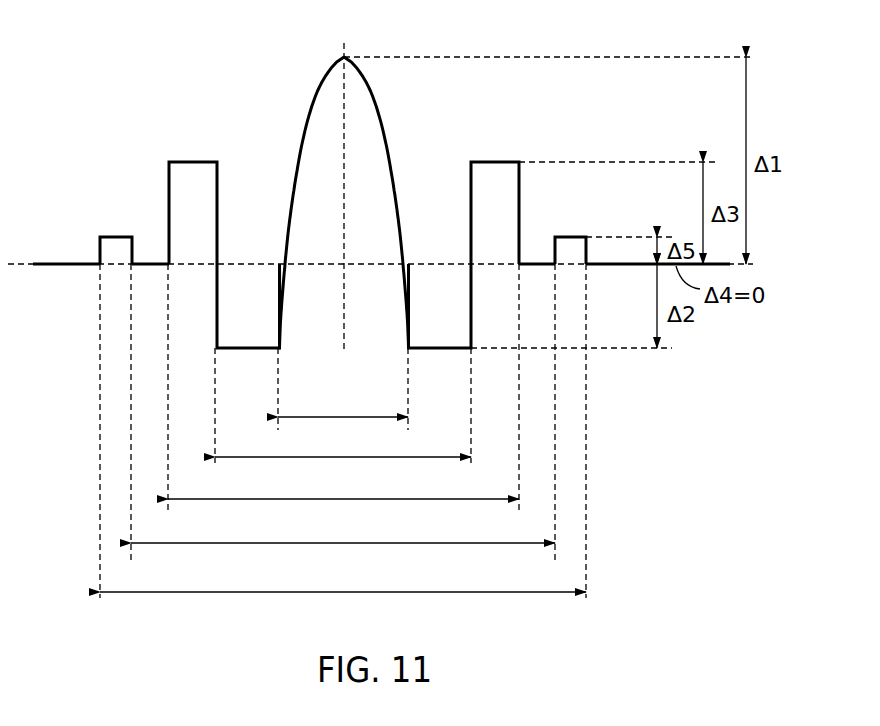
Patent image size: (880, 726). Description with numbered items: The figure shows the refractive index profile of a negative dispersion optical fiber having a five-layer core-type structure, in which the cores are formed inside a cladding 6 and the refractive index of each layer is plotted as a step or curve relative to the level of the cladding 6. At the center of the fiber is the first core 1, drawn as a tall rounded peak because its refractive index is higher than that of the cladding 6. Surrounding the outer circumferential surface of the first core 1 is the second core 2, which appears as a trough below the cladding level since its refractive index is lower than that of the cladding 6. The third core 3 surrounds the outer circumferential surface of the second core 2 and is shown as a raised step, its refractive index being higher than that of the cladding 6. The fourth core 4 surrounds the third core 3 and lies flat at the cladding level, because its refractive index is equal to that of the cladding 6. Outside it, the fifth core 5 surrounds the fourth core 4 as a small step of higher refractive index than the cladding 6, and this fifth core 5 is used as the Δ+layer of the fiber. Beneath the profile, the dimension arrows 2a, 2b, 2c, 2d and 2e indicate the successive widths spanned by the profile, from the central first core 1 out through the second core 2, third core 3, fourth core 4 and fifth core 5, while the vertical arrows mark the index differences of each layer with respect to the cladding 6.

The first core 1 is at (379, 108).
The second core 2 is at (248, 346).
The third core 3 is at (193, 160).
The fourth core 4 is at (148, 262).
The fifth core 5 is at (117, 235).
The cladding 6 is at (65, 262).
The width of central region 2a is at (343, 433).
The width across recessed regions 2b is at (343, 474).
The width across raised regions 2c is at (343, 515).
The width across flat regions 2d is at (343, 558).
The width across small raised regions 2e is at (343, 608).